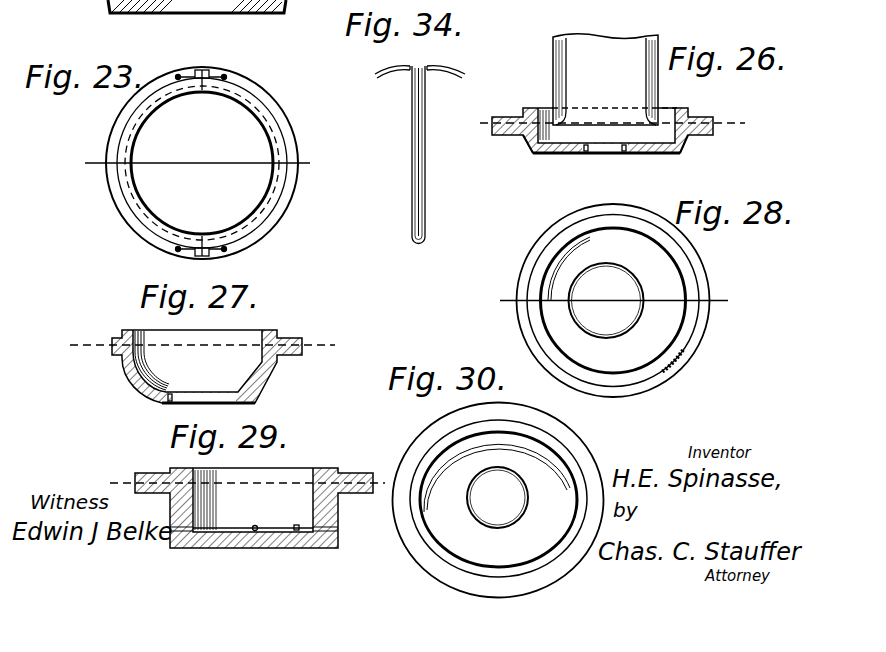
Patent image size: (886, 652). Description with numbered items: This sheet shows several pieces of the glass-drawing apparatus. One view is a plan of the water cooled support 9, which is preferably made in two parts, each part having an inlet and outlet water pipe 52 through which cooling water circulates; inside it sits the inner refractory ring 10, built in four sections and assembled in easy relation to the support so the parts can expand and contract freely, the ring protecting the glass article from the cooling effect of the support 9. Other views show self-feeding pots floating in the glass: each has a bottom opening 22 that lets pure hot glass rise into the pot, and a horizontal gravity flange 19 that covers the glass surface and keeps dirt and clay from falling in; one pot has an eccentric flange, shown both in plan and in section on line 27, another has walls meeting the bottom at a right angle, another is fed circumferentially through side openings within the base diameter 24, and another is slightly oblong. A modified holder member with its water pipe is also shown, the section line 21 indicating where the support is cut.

In FIG. 23, the water cooled support 9 is at (285, 128).
In FIG. 23, the inner refractory ring 10 is at (202, 163).
In FIG. 23, the section line 21 is at (197, 164).
In FIG. 23, the feed pipe 52 is at (224, 75).
In FIG. 26, the gravity flange 19 is at (700, 110).
In FIG. 28, the gravity flange 19 is at (688, 268).
In FIG. 27, the gravity flange 19 is at (290, 336).
In FIG. 26, the opening 22 is at (614, 153).
In FIG. 28, the opening 22 is at (592, 280).
In FIG. 27, the opening 22 is at (166, 401).
In FIG. 30, the opening 22 is at (512, 483).
In FIG. 29, the pin seat 24 is at (296, 526).
In FIG. 28, the section line 27 is at (612, 305).